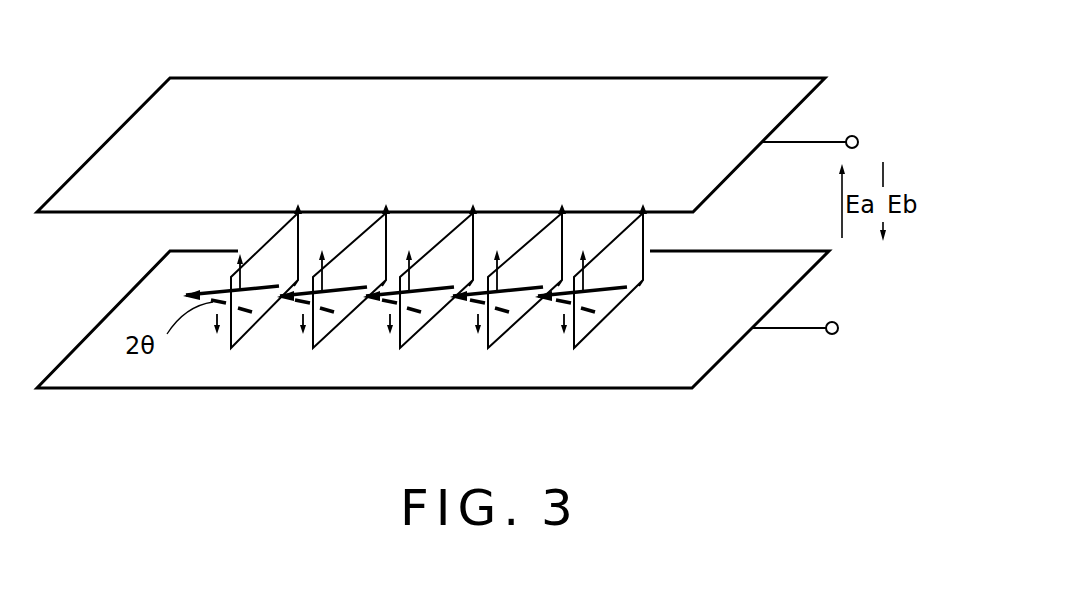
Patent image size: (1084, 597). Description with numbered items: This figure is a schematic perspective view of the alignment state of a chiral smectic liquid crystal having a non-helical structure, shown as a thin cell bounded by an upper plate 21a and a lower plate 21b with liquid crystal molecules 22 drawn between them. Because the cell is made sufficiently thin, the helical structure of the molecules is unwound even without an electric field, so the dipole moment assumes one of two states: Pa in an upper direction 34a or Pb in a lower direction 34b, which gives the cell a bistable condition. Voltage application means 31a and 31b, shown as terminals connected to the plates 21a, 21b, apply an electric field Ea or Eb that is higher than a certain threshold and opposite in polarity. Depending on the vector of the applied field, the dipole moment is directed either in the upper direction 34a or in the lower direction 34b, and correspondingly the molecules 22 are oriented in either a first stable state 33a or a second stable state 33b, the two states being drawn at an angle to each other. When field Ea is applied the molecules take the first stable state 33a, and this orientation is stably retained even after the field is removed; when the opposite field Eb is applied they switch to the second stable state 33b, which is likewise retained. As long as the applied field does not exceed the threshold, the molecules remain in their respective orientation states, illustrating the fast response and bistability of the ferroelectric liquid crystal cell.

The upper electrode plate 21a is at (738, 90).
The lower electrode plate 21b is at (775, 281).
The electro-optic element plates 22 is at (643, 237).
The voltage application means 31a is at (856, 135).
The voltage application means 31b is at (833, 335).
The first stable state 33a is at (266, 285).
The second stable state 33b is at (244, 314).
The upper direction 34a is at (236, 259).
The lower direction 34b is at (217, 312).